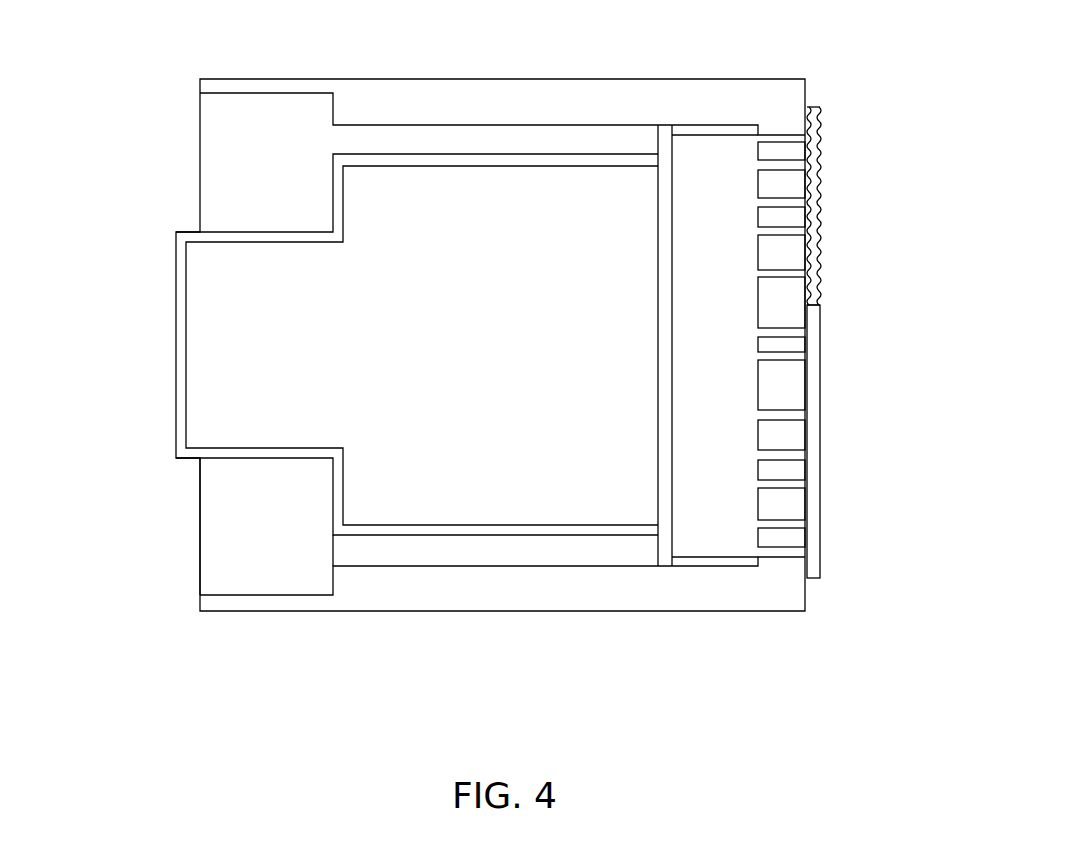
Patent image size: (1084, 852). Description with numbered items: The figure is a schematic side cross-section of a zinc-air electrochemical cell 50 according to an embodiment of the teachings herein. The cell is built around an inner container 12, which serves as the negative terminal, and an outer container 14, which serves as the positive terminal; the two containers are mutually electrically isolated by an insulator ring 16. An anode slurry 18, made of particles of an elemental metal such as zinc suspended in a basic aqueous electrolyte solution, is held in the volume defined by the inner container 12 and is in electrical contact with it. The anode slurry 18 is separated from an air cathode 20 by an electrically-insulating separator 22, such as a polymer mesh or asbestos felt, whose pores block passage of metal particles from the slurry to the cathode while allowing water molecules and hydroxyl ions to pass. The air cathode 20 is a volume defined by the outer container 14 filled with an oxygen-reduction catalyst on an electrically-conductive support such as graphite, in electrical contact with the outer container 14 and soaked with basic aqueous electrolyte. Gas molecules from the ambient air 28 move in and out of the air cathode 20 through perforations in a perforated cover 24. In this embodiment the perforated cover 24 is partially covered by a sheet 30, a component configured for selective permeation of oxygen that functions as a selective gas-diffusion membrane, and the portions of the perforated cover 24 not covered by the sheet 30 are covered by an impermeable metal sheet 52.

The zinc-air electrochemical cell 50 is at (147, 139).
The inner container 12 is at (177, 338).
The outer container 14 is at (375, 598).
The insulator ring 16 is at (222, 535).
The anode slurry 18 is at (488, 505).
The air cathode 20 is at (712, 153).
The separator 22 is at (668, 530).
The perforated cover 24 is at (793, 313).
The ambient air 28 is at (886, 185).
The sheet 30 is at (818, 185).
The impermeable metal sheet 52 is at (813, 472).